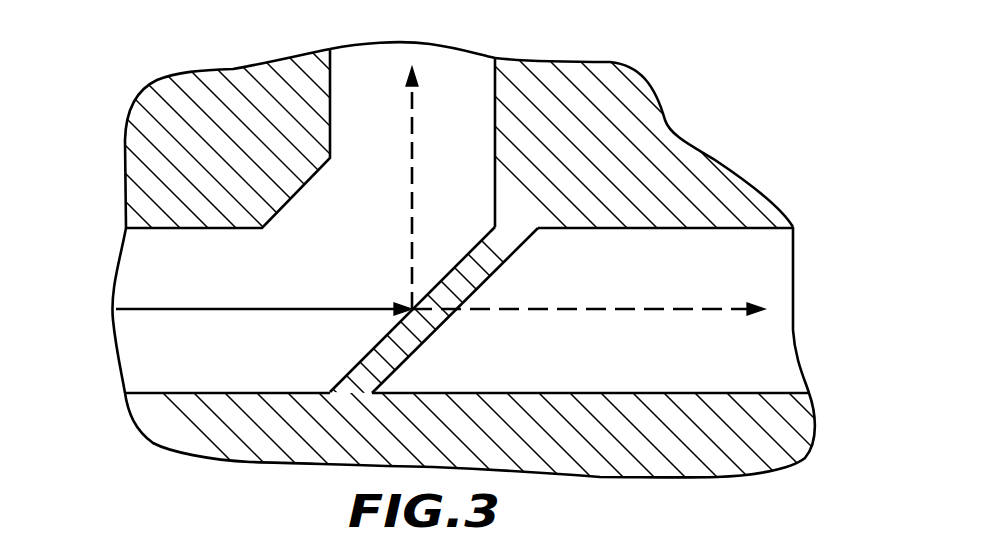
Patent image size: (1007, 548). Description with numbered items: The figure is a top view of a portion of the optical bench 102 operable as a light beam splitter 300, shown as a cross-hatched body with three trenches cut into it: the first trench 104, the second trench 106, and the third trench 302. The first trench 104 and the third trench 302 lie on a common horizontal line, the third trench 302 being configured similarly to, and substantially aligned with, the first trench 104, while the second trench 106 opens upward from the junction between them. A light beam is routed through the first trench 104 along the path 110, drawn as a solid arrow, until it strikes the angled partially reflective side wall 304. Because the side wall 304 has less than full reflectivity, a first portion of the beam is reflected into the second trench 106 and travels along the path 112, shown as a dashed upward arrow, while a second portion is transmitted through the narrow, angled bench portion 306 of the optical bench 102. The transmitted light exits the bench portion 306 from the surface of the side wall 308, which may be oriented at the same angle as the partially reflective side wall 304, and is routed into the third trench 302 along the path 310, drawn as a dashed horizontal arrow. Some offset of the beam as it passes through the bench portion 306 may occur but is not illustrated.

The light beam splitter 300 is at (735, 94).
The optical bench 102 is at (181, 423).
The first trench 104 is at (144, 278).
The second trench 106 is at (458, 74).
The path 110 is at (263, 308).
The path 112 is at (411, 198).
The third trench 302 is at (763, 268).
The partially reflective side wall 304 is at (364, 358).
The bench portion 306 is at (370, 373).
The side wall 308 is at (513, 252).
The path 310 is at (655, 309).